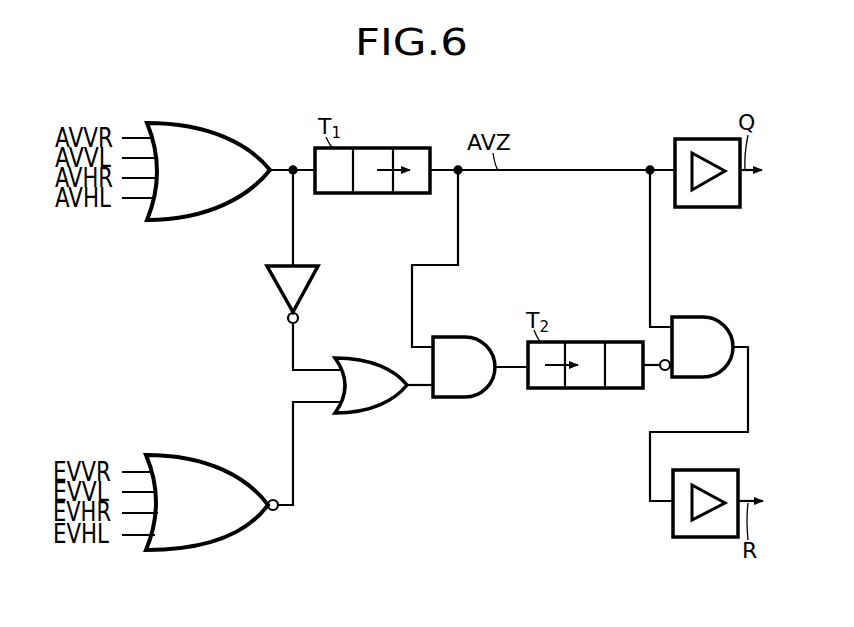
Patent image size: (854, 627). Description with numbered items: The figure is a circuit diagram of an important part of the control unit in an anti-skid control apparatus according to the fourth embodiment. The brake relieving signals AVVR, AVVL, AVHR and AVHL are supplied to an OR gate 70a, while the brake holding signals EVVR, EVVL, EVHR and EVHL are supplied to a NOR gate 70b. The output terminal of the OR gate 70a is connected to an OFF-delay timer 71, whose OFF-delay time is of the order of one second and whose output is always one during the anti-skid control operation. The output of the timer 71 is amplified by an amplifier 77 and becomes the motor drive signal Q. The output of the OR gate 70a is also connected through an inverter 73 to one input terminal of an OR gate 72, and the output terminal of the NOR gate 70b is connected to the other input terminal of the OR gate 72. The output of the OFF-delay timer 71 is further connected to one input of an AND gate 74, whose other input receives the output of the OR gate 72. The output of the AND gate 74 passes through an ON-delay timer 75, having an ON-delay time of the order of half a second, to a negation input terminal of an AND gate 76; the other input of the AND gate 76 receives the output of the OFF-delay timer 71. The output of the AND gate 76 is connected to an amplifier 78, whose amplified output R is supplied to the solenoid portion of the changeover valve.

The OR gate 70a is at (175, 123).
The NOR gate 70b is at (175, 455).
The OFF-delay timer 71 is at (366, 148).
The OR gate 72 is at (360, 358).
The inverter 73 is at (316, 278).
The AND gate 74 is at (460, 337).
The ON-delay timer 75 is at (583, 342).
The AND gate 76 is at (699, 317).
The amplifier 77 is at (705, 139).
The amplifier 78 is at (707, 537).